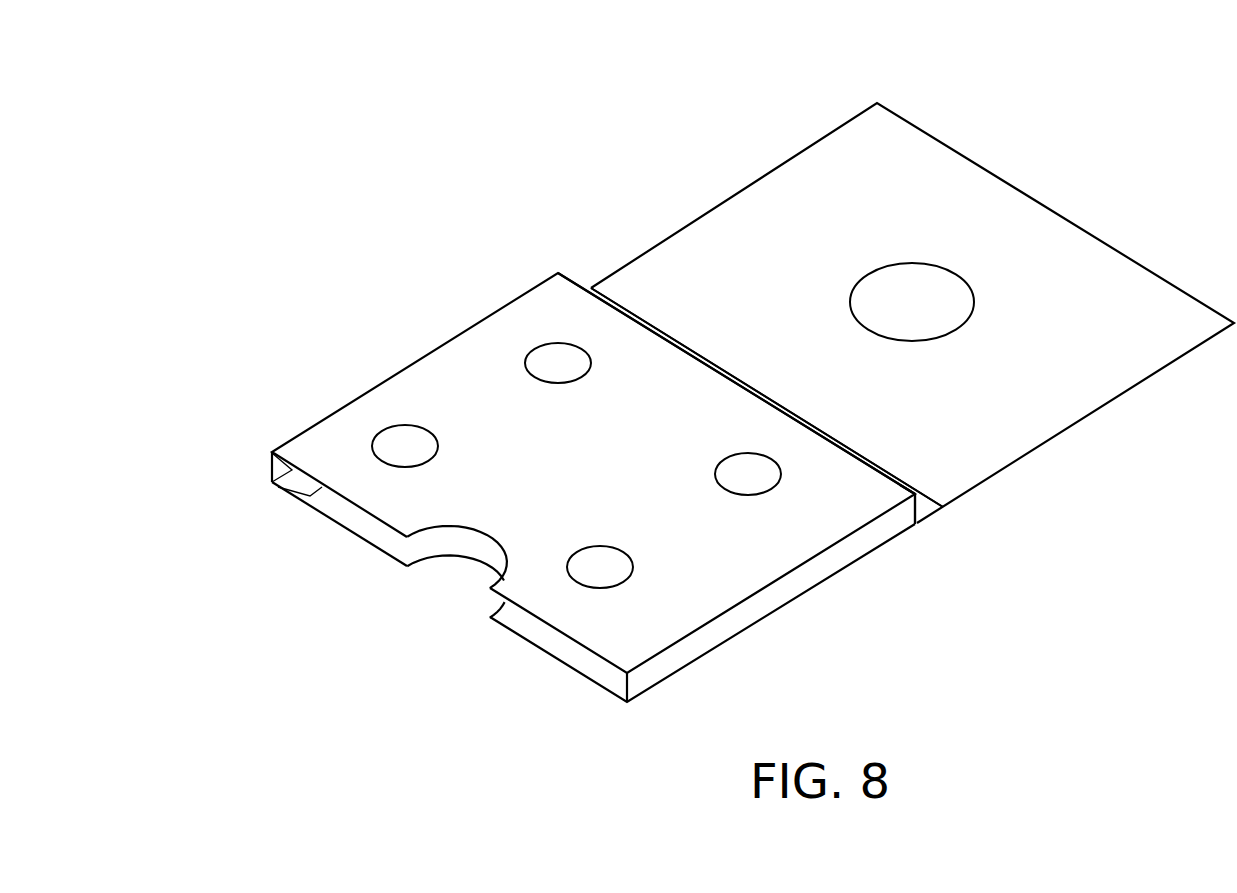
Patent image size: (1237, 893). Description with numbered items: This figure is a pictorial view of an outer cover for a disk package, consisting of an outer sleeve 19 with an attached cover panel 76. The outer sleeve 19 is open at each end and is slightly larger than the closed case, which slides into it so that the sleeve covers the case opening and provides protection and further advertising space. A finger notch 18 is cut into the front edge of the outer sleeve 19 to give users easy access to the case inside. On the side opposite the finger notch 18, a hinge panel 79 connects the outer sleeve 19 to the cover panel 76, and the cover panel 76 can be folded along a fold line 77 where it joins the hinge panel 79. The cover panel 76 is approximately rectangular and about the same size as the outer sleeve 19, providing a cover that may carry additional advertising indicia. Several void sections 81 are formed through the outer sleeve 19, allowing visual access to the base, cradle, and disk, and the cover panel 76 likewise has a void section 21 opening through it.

The cover panel 76 is at (895, 143).
The aperture in substrate 21 is at (910, 285).
The outer sleeve 19 is at (320, 448).
The hinge panel 79 is at (595, 290).
The fold line 77 is at (913, 487).
The finger notches 18 is at (462, 570).
The void sections 81 is at (553, 367).